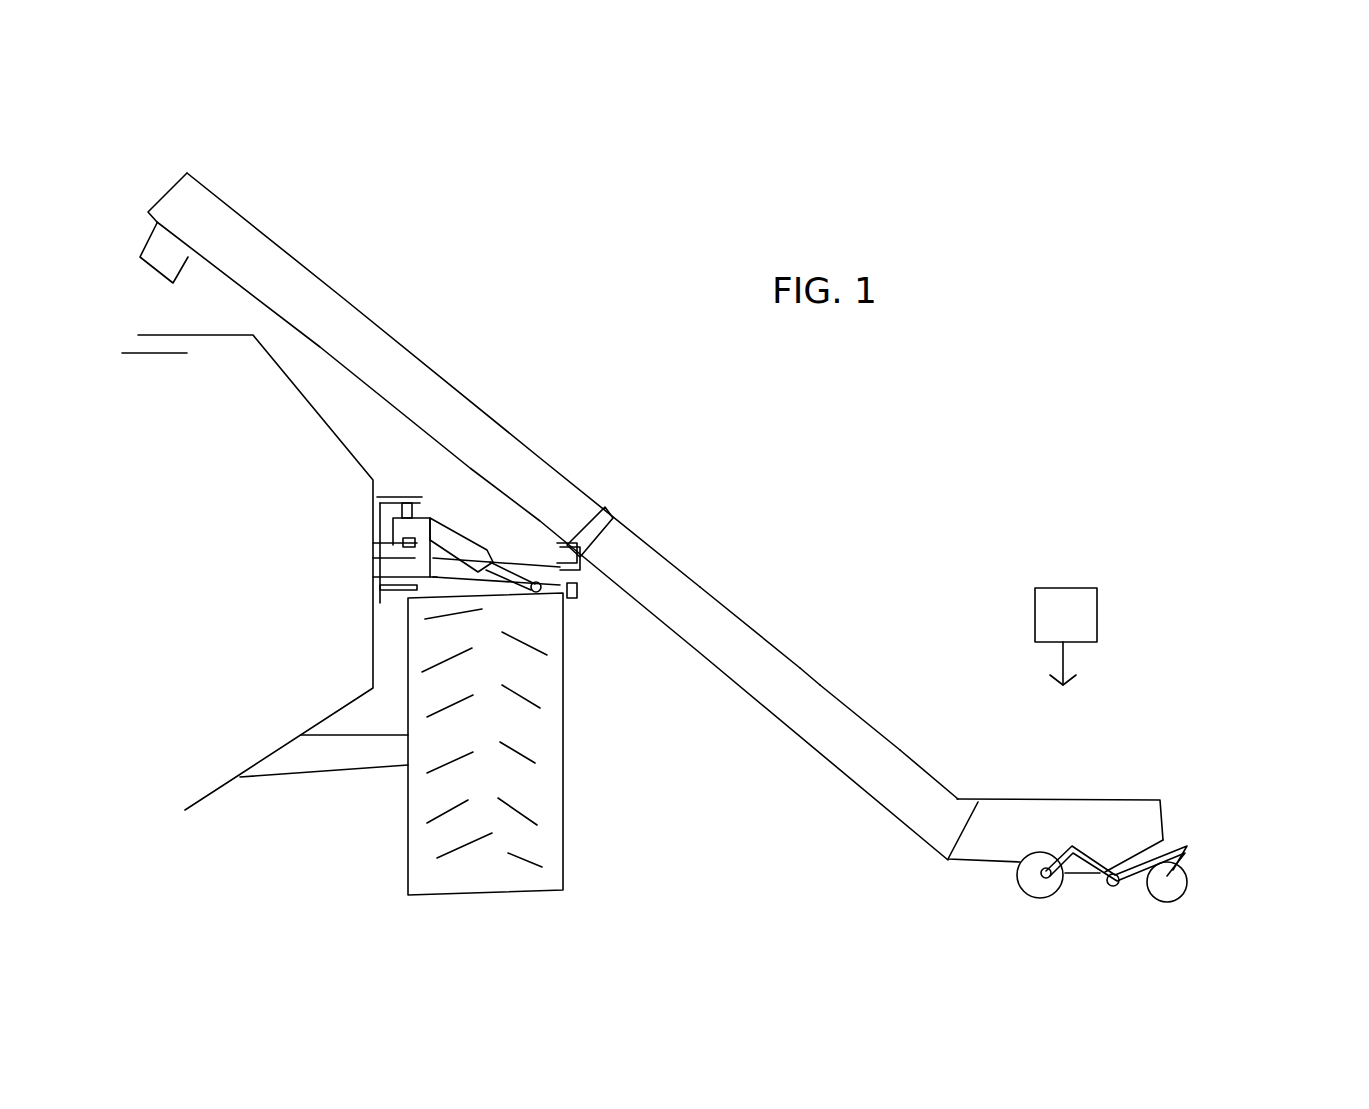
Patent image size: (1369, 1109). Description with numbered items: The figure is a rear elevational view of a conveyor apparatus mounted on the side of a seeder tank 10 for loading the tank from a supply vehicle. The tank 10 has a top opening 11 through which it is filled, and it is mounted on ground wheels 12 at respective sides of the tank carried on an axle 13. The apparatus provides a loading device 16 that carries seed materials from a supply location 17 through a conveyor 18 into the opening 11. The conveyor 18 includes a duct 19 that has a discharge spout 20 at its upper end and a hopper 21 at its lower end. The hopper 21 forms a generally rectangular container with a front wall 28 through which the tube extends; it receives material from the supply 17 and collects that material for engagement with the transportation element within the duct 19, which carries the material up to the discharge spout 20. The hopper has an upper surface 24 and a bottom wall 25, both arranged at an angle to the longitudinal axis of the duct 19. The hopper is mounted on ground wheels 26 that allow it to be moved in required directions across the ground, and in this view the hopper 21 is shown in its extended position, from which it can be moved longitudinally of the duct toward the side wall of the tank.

The tank 10 is at (342, 445).
The top opening 11 is at (188, 345).
The ground wheels 12 is at (553, 740).
The axle 13 is at (327, 777).
The loading device 16 is at (607, 485).
The supply location 17 is at (1063, 588).
The conveyor 18 is at (730, 612).
The duct 19 is at (867, 718).
The discharge spout 20 is at (162, 252).
The hopper 21 is at (1060, 797).
The upper surface 24 is at (1130, 797).
The bottom wall 25 is at (987, 865).
The ground wheels 26 is at (1200, 828).
The front wall 28 is at (1167, 820).